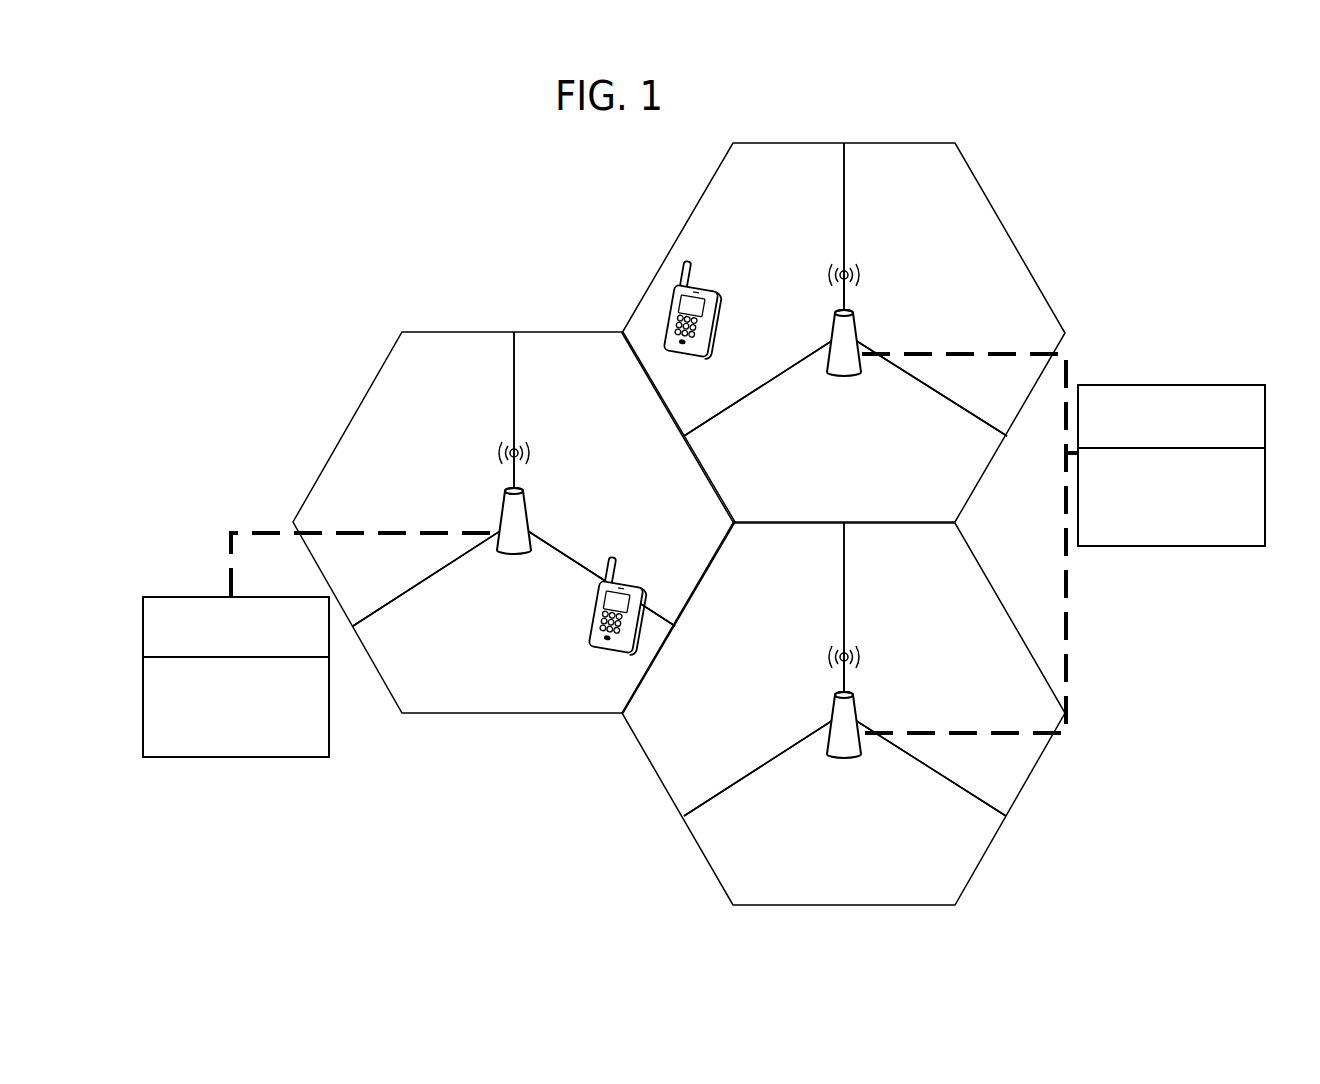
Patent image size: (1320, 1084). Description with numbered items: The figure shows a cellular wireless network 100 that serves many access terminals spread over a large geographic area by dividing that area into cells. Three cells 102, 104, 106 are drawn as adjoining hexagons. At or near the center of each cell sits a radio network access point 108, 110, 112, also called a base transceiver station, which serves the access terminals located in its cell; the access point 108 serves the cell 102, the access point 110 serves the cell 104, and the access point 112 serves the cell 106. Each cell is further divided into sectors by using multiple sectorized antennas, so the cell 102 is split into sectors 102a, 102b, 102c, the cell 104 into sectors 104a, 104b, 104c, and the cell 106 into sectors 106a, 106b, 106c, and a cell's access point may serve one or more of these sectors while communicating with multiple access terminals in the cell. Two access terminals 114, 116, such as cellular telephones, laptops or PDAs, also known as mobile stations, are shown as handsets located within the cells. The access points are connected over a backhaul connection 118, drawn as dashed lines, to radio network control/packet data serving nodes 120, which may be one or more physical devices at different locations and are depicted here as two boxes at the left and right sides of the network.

The wireless communication system 100 is at (445, 220).
The cell 102 is at (345, 405).
The sector 102a is at (437, 483).
The sector 102b is at (625, 483).
The sector 102c is at (542, 690).
The cell 104 is at (997, 200).
The sector 104a is at (793, 279).
The sector 104b is at (973, 294).
The sector 104c is at (886, 465).
The cell 106 is at (655, 812).
The sector 106a is at (786, 649).
The sector 106b is at (967, 675).
The sector 106c is at (876, 869).
The radio network access point 108 is at (491, 552).
The radio network access point 110 is at (826, 375).
The radio network access point 112 is at (828, 756).
The access terminal 114 is at (708, 355).
The access terminal 116 is at (596, 648).
The backhaul connection 118 is at (230, 556).
The radio network control/packet data serving node 120 is at (704, 571).